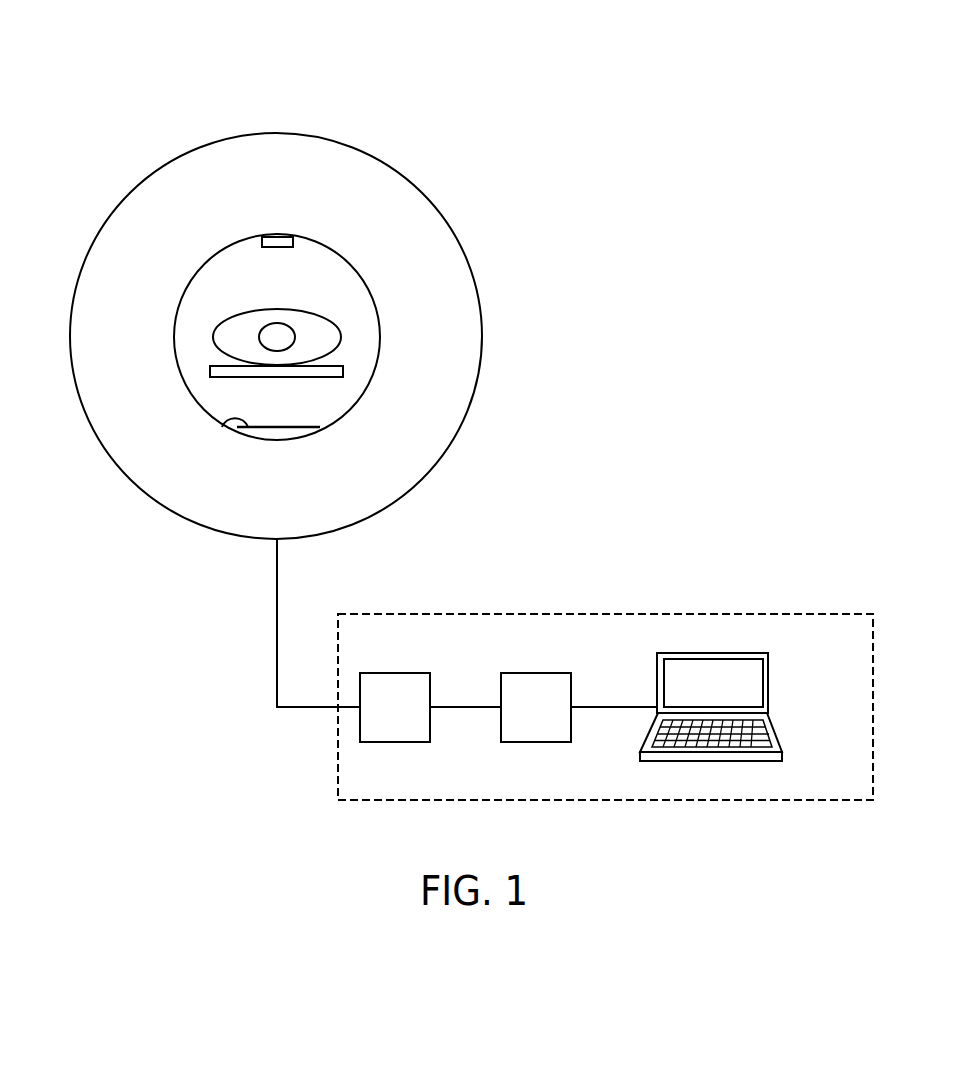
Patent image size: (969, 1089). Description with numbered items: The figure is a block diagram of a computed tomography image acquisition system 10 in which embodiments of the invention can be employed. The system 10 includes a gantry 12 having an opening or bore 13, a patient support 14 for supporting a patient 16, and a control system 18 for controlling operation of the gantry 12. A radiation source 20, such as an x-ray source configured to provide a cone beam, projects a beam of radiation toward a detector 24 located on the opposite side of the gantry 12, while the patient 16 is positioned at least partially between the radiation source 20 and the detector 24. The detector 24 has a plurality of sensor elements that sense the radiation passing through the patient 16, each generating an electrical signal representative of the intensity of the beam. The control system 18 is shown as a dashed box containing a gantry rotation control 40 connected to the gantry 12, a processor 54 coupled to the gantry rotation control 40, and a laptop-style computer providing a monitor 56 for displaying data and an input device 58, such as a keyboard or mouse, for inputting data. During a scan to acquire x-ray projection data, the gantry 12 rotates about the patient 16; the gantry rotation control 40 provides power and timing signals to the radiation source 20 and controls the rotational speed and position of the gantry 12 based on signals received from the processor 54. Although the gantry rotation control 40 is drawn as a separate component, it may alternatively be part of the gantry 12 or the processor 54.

The computed tomography image acquisition system 10 is at (546, 128).
The gantry 12 is at (289, 133).
The opening (or bore) 13 is at (332, 277).
The patient support 14 is at (332, 377).
The patient 16 is at (333, 340).
The control system 18 is at (613, 614).
The radiation source 20 is at (287, 237).
The detector 24 is at (222, 427).
The gantry rotation control 40 is at (395, 707).
The processor 54 is at (536, 707).
The monitor 56 is at (768, 675).
The input device 58 is at (782, 745).